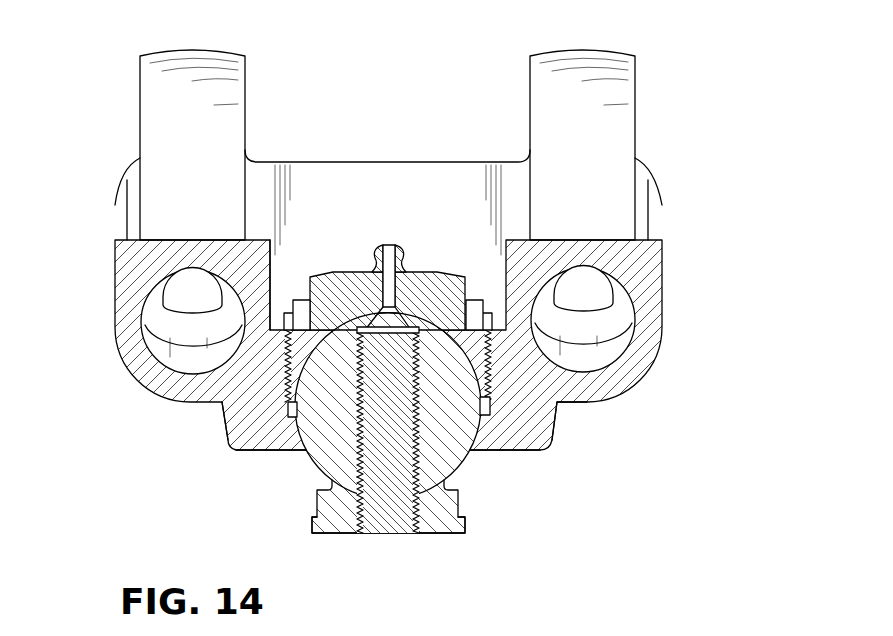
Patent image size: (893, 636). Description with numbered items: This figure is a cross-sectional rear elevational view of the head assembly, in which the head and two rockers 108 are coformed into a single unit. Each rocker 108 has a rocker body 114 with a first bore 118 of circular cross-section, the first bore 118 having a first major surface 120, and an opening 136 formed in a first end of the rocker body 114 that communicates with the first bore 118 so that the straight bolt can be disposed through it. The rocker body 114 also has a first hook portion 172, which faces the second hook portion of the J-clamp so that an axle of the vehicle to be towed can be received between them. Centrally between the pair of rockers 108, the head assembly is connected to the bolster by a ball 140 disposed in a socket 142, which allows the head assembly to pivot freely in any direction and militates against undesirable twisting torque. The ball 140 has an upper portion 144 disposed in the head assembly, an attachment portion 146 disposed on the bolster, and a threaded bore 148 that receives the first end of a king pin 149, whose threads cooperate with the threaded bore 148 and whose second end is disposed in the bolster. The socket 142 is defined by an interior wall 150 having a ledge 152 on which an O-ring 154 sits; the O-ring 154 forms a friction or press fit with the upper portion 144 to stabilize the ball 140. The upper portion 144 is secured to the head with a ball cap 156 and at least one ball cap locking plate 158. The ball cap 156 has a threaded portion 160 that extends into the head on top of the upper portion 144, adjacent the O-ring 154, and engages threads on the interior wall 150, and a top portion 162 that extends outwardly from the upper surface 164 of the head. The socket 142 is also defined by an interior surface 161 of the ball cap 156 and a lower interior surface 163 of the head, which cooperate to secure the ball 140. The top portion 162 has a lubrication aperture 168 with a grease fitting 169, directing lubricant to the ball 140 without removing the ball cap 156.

The rocker 108 is at (411, 280).
The rocker body 114 is at (657, 197).
The first bore 118 is at (373, 342).
The first major surface 120 is at (677, 345).
The opening 136 is at (165, 288).
The ball 140 is at (460, 460).
The socket 142 is at (473, 450).
The upper portion 144 is at (447, 430).
The attachment portion 146 is at (450, 533).
The threaded bore 148 is at (360, 533).
The king pin 149 is at (408, 533).
The interior wall 150 is at (477, 430).
The ledge 152 is at (290, 418).
The O-ring 154 is at (288, 449).
The ball cap 156 is at (333, 271).
The ball cap locking plate 158 is at (483, 317).
The threaded portion 160 is at (285, 357).
The interior surface 161 is at (230, 438).
The top portion 162 is at (307, 298).
The lower interior surface 163 is at (545, 448).
The upper surface 164 is at (270, 318).
The lubrication aperture 168 is at (390, 290).
The grease fitting 169 is at (375, 247).
The first hook portion 172 is at (637, 72).